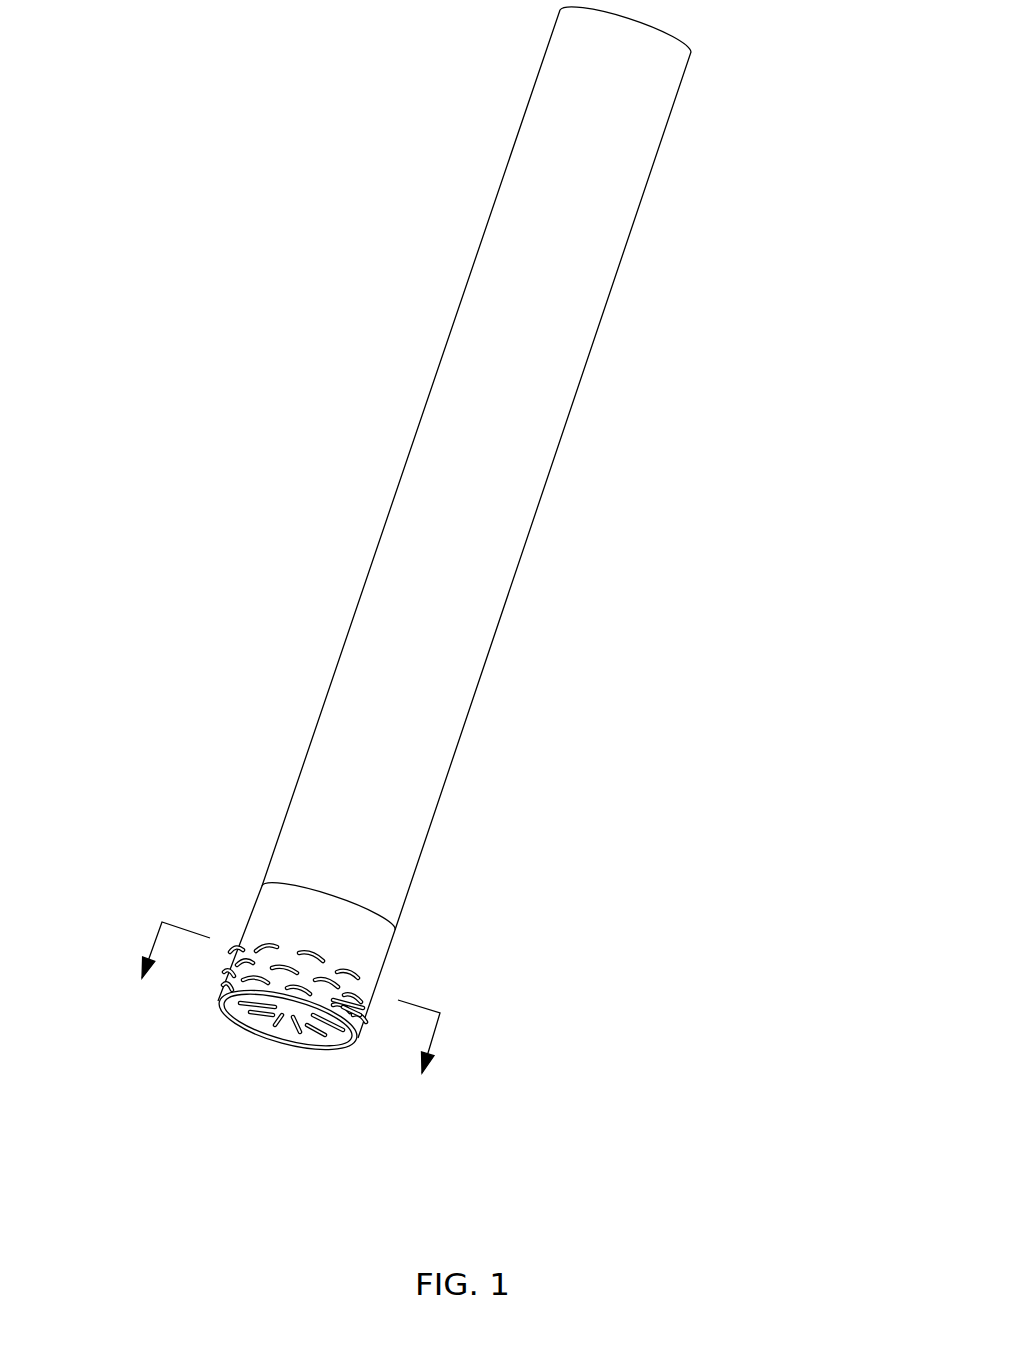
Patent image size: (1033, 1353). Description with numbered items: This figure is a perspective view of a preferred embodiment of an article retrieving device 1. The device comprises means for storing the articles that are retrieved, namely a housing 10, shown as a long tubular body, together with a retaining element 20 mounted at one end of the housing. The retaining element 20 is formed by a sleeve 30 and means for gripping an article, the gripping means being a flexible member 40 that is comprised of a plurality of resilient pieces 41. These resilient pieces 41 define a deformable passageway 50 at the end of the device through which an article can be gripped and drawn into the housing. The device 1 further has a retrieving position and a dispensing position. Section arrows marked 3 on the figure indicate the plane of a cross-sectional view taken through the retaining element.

The article retrieving device 1 is at (466, 590).
The housing 10 is at (573, 402).
The retaining element 20 is at (406, 973).
The sleeve 30 is at (360, 925).
The flexible member 40 is at (268, 944).
The resilient pieces 41 is at (352, 1025).
The deformable passageway 50 is at (275, 1025).
The section line 3- 3 is at (283, 1019).